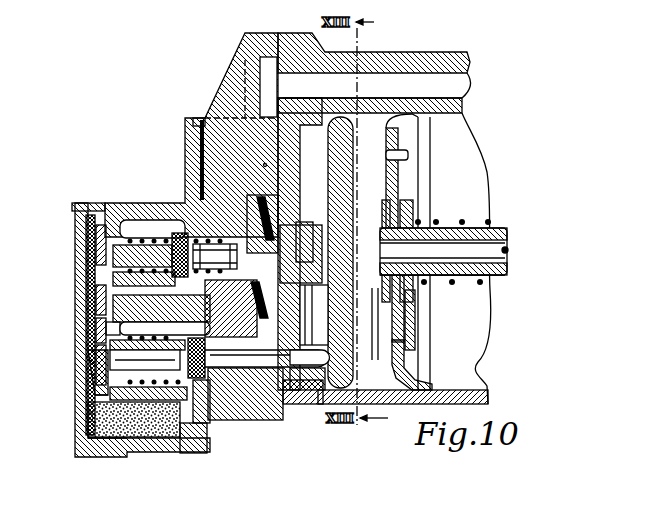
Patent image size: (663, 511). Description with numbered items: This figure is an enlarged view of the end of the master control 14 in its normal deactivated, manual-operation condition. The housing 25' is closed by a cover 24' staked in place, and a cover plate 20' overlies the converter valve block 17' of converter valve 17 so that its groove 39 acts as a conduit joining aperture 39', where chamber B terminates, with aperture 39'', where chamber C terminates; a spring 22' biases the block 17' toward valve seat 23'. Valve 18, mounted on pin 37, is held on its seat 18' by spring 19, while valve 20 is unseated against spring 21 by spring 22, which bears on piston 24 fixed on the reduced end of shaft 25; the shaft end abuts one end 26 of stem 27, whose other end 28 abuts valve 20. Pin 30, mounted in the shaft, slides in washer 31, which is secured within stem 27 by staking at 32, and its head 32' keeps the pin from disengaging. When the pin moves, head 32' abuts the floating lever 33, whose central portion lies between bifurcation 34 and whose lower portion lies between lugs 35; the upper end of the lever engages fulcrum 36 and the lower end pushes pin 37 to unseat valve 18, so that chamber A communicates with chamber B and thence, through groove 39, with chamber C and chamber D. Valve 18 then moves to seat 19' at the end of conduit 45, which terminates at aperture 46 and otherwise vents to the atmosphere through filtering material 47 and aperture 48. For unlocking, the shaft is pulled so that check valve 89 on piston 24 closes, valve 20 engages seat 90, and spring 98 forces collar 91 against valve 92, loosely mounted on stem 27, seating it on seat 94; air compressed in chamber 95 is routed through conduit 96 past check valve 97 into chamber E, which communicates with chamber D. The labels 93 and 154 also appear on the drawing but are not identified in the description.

The master control 14 is at (420, 52).
The converter valve 17 is at (60, 247).
The converter valve block 17' is at (105, 341).
The valve 18 is at (244, 409).
The seat 18' is at (223, 402).
The spring 19 is at (193, 450).
The seat 19' is at (148, 375).
The valve 20 is at (191, 135).
The cover plate 20' is at (113, 329).
The spring 21 is at (127, 222).
The spring 22 is at (453, 232).
The spring 22' is at (49, 325).
The valve seat 23' is at (53, 311).
The piston 24 is at (426, 233).
The cover 24' is at (55, 372).
The shaft 25 is at (442, 285).
The housing 25' is at (107, 470).
The end of stem 26 is at (385, 215).
The stem 27 is at (300, 225).
The end of stem 28 is at (196, 257).
The pin 30 is at (509, 250).
The washer 31 is at (378, 285).
The staking 32 is at (394, 223).
The head 32' is at (388, 311).
The floating lever 33 is at (355, 177).
The bifurcation 34 is at (311, 315).
The lugs 35 is at (325, 405).
The fulcrum 36 is at (300, 138).
The pin 37 is at (300, 350).
The groove 39 is at (73, 300).
The aperture 39' is at (55, 341).
The aperture 39'' is at (106, 278).
The conduit 45 is at (146, 367).
The aperture 46 is at (102, 384).
The filtering material 47 is at (140, 432).
The aperture 48 is at (210, 440).
The check valve 89 is at (425, 345).
The seat 90 is at (175, 170).
The collar 91 is at (234, 225).
The valve 92 is at (301, 254).
The seal block 93 is at (222, 312).
The seat 94 is at (314, 315).
The chamber 95 is at (480, 360).
The conduit 96 is at (473, 86).
The check valve 97 is at (288, 90).
The spring 98 is at (190, 285).
The flange 154 is at (90, 203).
The chamber A is at (248, 395).
The chamber B is at (78, 330).
The chamber C is at (148, 235).
The chamber D is at (180, 178).
The chamber E is at (265, 165).